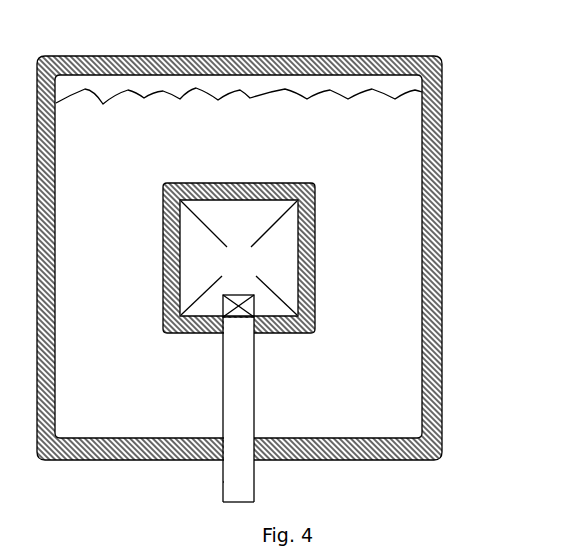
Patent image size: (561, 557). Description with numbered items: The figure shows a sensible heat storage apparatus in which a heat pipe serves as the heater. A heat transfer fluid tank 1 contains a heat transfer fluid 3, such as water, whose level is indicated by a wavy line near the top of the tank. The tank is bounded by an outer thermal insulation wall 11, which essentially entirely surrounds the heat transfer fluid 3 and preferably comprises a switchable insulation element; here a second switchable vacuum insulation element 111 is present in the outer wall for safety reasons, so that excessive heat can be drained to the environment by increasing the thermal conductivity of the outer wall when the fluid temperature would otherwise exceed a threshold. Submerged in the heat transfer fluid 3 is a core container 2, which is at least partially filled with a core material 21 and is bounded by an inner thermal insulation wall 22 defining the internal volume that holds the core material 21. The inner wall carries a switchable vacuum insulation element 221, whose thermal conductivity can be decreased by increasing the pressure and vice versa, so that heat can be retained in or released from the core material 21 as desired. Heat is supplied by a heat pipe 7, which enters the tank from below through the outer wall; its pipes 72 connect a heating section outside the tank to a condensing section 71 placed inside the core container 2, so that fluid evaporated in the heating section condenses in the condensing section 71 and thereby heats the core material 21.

The heat transfer fluid tank 1 is at (278, 237).
The outer thermal insulation wall 11 is at (278, 258).
The second switchable vacuum insulation element 111 is at (432, 206).
The core container 2 is at (330, 233).
The core material 21 is at (252, 269).
The inner thermal insulation wall 22 is at (330, 258).
The switchable vacuum insulation element 221 is at (302, 288).
The heat transfer fluid 3 is at (246, 135).
The heat pipe 7 is at (373, 392).
The condensing section 71 is at (254, 310).
The pipes 72 is at (255, 391).